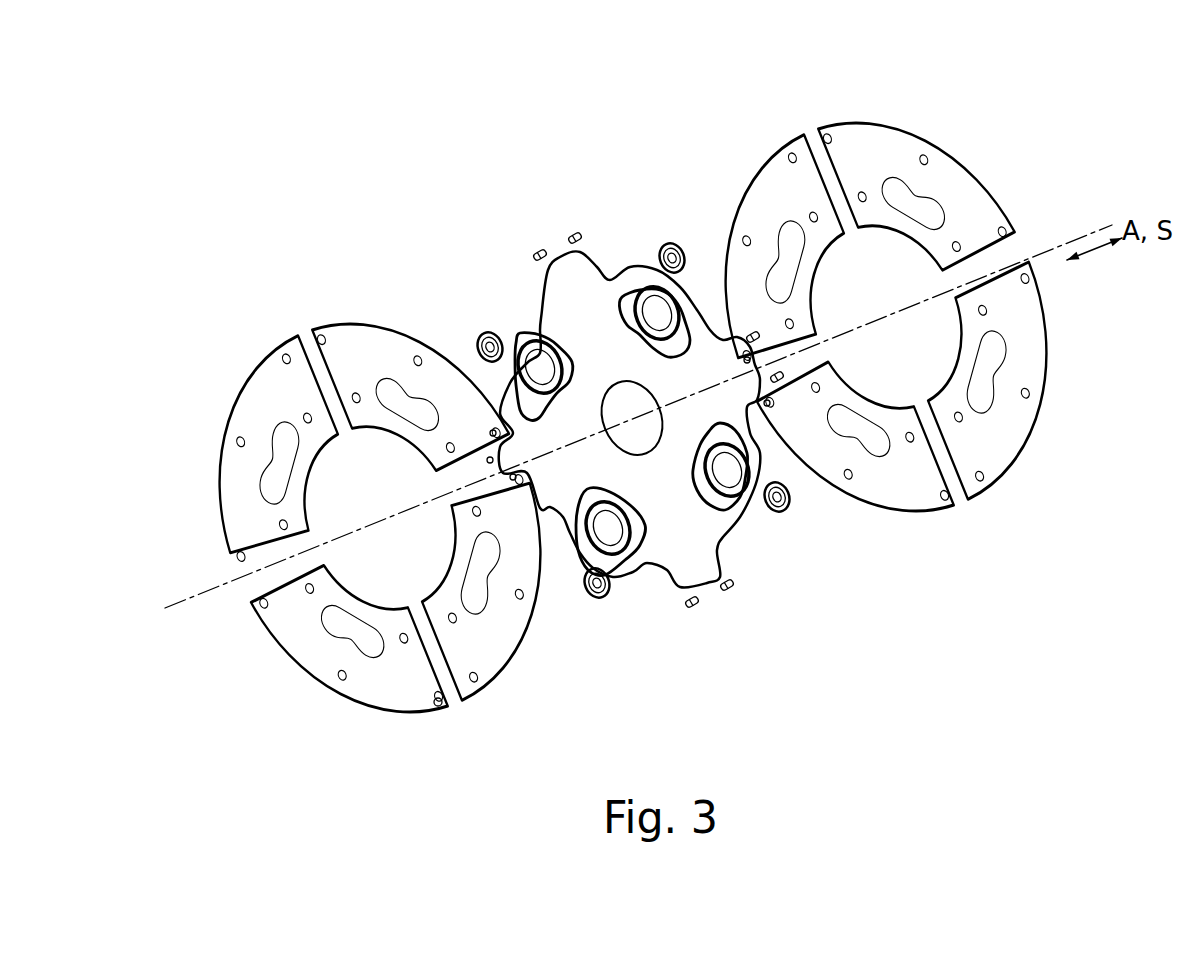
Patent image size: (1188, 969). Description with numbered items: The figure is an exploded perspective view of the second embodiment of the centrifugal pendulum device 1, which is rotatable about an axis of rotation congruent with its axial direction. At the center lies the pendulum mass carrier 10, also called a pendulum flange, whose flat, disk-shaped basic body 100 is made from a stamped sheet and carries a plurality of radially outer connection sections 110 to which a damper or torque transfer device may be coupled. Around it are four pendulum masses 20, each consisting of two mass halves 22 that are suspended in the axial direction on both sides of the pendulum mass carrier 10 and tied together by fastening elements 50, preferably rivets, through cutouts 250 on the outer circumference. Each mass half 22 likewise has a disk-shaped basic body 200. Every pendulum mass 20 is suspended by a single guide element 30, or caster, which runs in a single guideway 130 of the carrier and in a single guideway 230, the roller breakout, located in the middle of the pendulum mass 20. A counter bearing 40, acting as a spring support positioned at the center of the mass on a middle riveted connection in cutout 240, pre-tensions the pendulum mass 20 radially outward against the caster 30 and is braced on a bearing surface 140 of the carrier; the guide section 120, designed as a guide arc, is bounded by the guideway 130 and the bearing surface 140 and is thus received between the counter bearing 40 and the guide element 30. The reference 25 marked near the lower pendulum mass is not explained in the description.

The centrifugal pendulum device 1 is at (444, 189).
The pendulum mass carrier 10 is at (632, 416).
The pendulum mass 20 is at (630, 420).
The mass half 22 is at (630, 420).
The fastening hole 25 is at (437, 707).
The guide element 30 is at (540, 360).
The counter bearing 40 is at (677, 247).
The fastening element 50 is at (573, 235).
The basic body of the pendulum mass carrier 100 is at (583, 450).
The radially outer connection section 110 is at (562, 245).
The guide section 120 is at (540, 363).
The guideway 130 is at (635, 307).
The bearing surface 140 is at (700, 300).
The basic body of the pendulum mass 200 is at (233, 505).
The guideway 230 is at (383, 377).
The cutout 240 is at (237, 450).
The cutout 250 is at (288, 353).